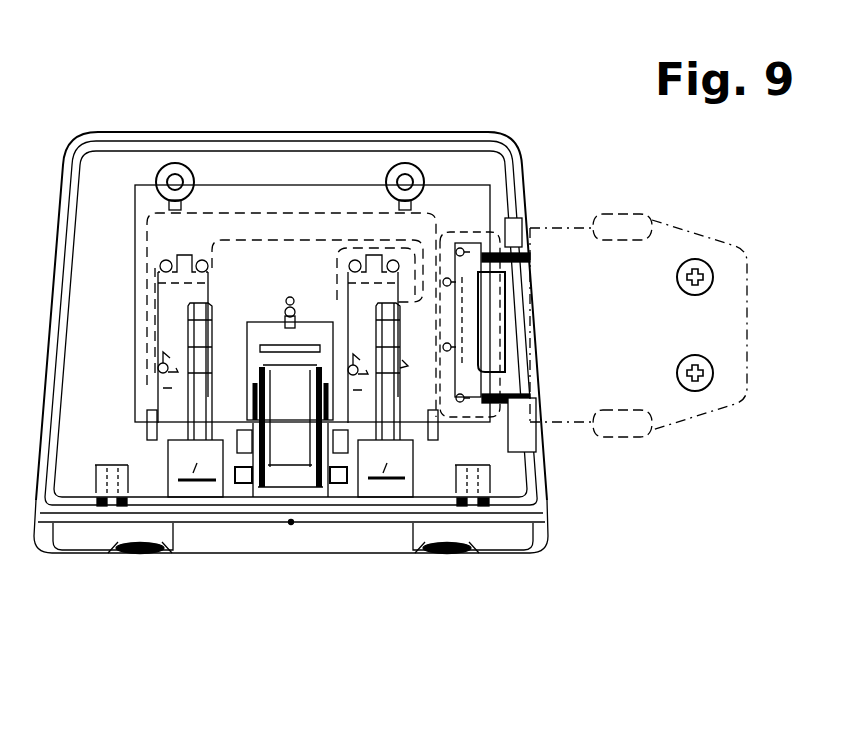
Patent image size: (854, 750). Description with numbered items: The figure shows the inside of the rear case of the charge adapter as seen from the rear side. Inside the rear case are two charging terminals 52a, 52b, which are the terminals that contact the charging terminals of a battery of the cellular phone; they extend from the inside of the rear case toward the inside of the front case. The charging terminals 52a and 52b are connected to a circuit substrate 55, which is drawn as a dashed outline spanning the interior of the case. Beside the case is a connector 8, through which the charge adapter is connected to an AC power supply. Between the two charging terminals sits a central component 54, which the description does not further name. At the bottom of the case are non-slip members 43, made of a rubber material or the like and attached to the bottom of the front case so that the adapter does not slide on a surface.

The connector 8 is at (570, 267).
The non-slip members 43 is at (130, 557).
The charging terminal 52a is at (188, 460).
The charging terminal 52b is at (386, 470).
The switch 54 is at (257, 488).
The circuit substrate 55 is at (295, 223).